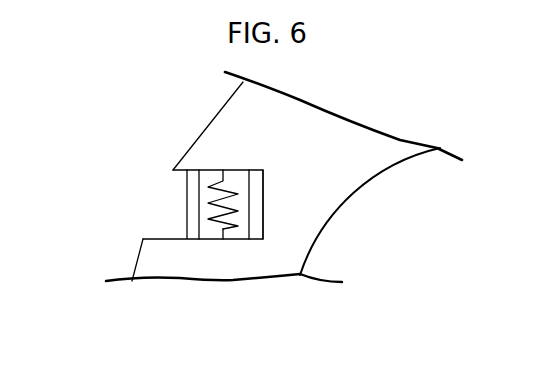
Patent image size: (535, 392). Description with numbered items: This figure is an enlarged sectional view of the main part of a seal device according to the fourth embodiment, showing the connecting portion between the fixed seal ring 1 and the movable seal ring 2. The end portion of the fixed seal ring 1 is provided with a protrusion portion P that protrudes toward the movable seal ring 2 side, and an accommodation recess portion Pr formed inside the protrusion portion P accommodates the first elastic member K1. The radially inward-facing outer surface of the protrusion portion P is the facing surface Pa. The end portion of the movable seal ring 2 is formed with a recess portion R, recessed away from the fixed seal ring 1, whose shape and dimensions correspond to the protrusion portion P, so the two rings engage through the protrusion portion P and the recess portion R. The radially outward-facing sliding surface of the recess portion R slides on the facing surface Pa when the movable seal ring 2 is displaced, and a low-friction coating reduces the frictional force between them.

The fixed seal ring 1 is at (157, 262).
The movable seal ring 2 is at (222, 120).
The recess portion R is at (174, 172).
The first elastic member K1 is at (212, 185).
The protrusion portion P is at (190, 214).
The facing surface Pa is at (263, 220).
The accommodation recess portion Pr is at (242, 240).